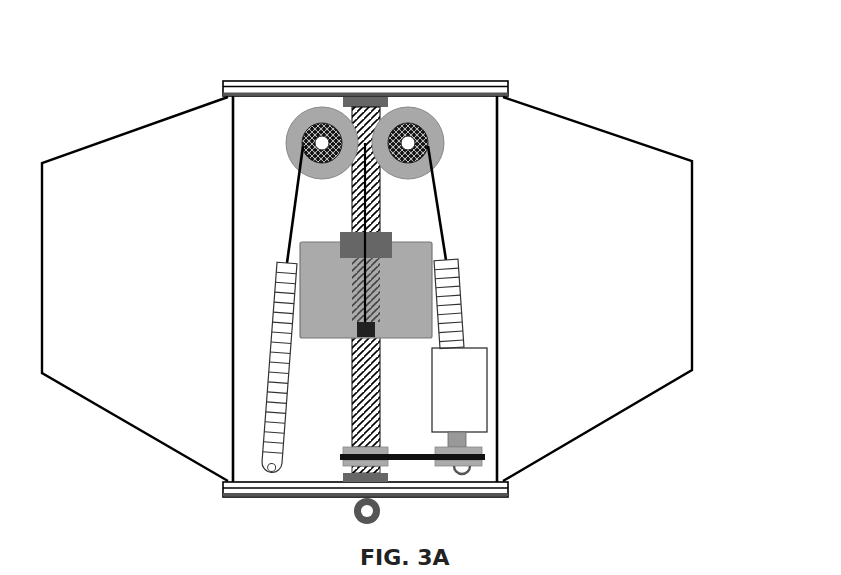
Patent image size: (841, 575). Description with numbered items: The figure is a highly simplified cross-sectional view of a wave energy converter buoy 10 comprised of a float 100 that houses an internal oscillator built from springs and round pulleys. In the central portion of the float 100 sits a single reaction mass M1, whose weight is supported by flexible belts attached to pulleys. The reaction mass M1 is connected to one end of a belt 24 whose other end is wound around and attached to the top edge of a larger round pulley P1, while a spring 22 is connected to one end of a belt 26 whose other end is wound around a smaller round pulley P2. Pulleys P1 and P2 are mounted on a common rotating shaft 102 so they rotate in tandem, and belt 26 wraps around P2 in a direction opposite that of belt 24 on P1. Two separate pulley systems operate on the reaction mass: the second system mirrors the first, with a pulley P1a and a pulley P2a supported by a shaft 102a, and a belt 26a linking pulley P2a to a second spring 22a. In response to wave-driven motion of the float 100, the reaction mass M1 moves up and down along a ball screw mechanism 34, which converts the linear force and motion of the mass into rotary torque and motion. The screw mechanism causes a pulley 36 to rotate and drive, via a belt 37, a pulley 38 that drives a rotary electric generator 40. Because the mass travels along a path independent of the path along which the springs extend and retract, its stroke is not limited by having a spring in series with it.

The WEC buoy 10 is at (84, 50).
The float 100 is at (682, 226).
The round pulley P1 is at (285, 120).
The round pulley P2 is at (293, 110).
The shaft 102 is at (330, 112).
The round pulley P1a is at (445, 118).
The round pulley P2a is at (428, 110).
The shaft 102a is at (405, 112).
The belt 26 is at (297, 185).
The belt 26a is at (440, 180).
The belt 24 is at (352, 205).
The reaction mass M1 is at (322, 270).
The ball screw mechanism 34 is at (380, 205).
The spring 22 is at (268, 347).
The spring 22a is at (460, 333).
The rotary electric generator 40 is at (467, 418).
The pulley 36 is at (343, 466).
The belt 37 is at (407, 460).
The pulley 38 is at (473, 473).